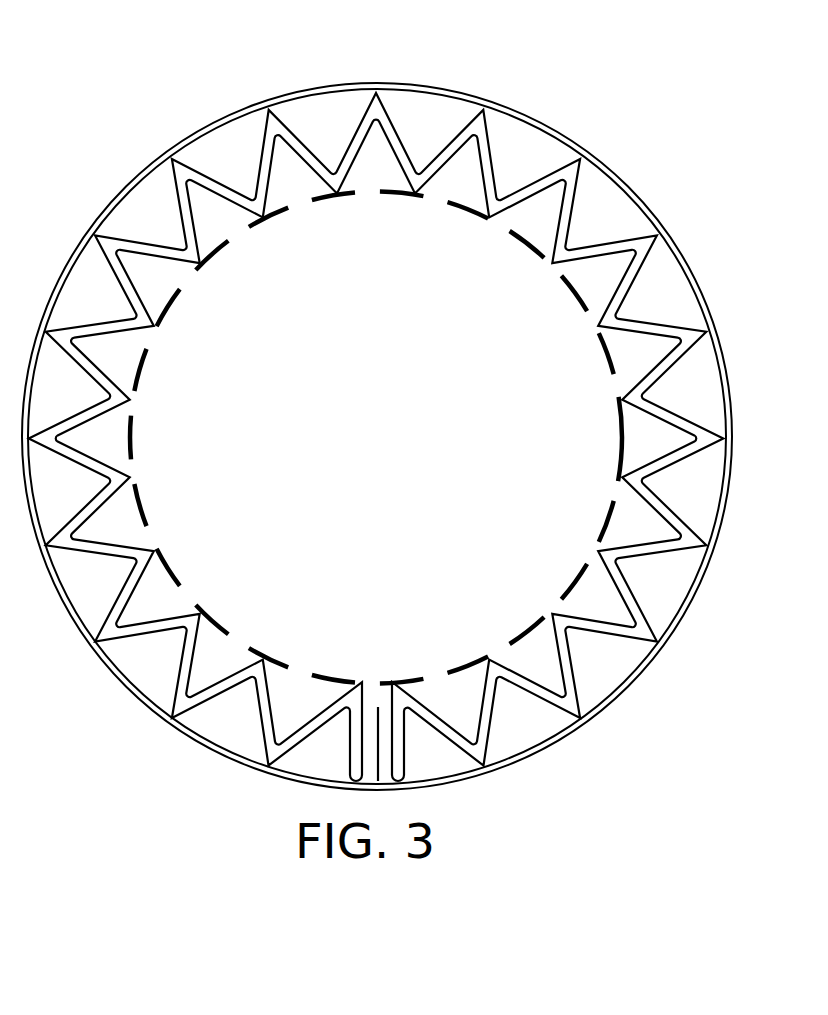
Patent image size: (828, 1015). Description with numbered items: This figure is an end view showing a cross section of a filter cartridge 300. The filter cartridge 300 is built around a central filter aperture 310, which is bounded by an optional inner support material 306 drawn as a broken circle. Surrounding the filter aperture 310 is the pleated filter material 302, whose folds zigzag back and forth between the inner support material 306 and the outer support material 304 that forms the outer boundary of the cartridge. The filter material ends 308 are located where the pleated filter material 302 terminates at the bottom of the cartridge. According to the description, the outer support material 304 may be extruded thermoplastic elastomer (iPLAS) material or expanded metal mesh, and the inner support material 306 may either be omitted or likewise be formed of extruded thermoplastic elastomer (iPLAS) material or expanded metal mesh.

The filter cartridge 300 is at (437, 48).
The pleated filter material 302 is at (170, 208).
The outer support material 304 is at (612, 168).
The inner support material 306 is at (600, 364).
The filter material ends 308 is at (378, 695).
The filter aperture 310 is at (292, 437).